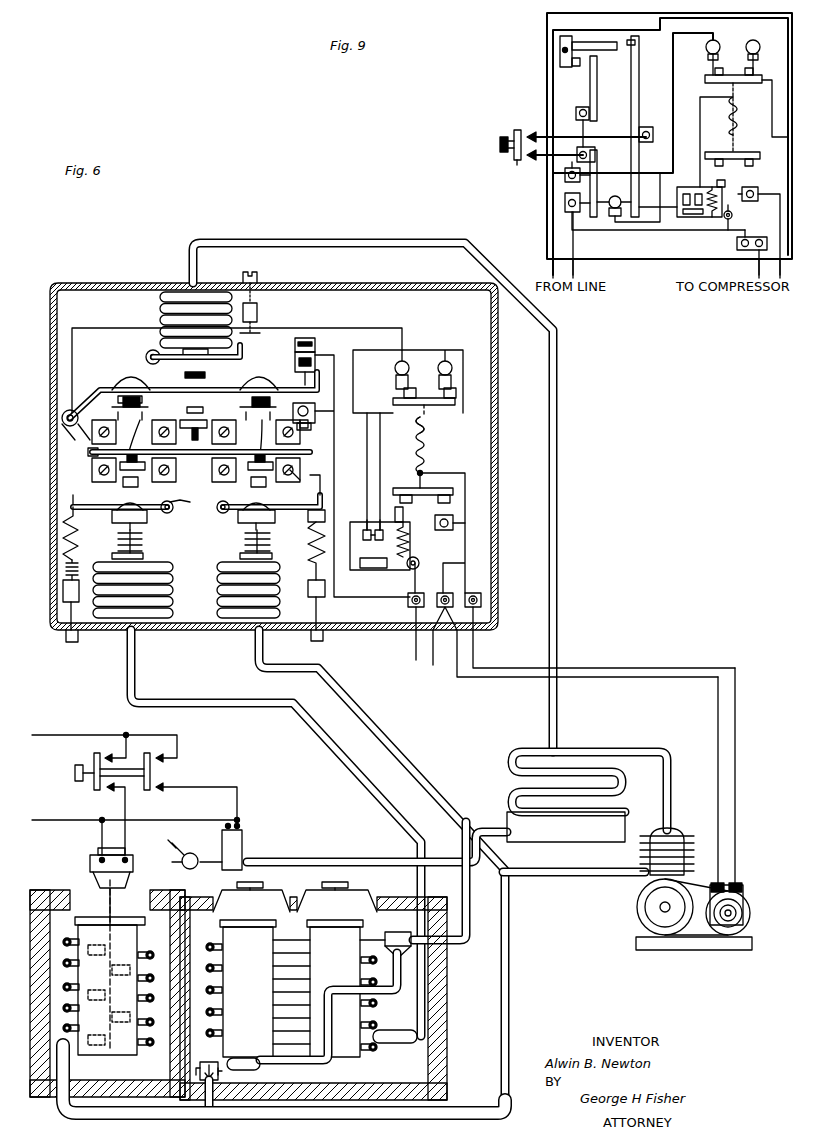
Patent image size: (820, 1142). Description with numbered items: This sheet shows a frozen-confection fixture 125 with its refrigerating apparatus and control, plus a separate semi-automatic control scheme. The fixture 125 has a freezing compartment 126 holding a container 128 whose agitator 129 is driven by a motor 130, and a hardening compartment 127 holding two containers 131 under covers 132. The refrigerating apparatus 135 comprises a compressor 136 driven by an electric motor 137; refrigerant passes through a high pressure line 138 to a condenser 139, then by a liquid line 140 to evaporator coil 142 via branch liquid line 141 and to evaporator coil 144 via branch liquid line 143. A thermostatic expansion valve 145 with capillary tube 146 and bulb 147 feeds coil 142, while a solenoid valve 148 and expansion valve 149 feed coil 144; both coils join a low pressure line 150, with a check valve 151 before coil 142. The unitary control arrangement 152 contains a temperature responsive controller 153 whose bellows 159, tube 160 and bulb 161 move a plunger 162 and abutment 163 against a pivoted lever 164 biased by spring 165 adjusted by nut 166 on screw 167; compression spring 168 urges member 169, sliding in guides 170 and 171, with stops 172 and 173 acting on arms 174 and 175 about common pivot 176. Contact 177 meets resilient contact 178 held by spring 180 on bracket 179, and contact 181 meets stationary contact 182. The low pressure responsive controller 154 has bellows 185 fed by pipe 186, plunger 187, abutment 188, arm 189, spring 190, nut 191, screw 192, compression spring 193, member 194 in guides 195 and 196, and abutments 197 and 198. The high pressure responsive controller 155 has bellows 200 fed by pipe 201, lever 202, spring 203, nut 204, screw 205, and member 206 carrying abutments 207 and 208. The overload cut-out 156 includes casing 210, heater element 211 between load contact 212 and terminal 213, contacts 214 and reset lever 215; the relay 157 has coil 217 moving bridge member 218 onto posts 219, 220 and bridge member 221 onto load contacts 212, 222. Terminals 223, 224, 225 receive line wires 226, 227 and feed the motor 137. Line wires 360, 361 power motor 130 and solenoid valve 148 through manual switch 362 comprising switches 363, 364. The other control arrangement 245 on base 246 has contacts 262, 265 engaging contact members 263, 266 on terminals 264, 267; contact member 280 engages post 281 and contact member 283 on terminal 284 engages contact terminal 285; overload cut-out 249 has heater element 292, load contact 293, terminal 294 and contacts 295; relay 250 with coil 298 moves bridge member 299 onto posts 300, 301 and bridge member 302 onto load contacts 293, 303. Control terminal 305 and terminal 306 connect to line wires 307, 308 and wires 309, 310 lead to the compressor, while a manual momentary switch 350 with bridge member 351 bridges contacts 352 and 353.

In FIG. 6, the unitary control arrangement 152 is at (100, 246).
In FIG. 6, the high pressure responsive controller 155 is at (210, 275).
In FIG. 6, the pipe 201 is at (560, 441).
In FIG. 6, the capillary tube 160 is at (174, 703).
In FIG. 6, the pipe 186 is at (338, 676).
In FIG. 6, the branch liquid line 143 is at (305, 858).
In FIG. 6, the liquid line 140 is at (472, 838).
In FIG. 6, the branch liquid line 141 is at (472, 900).
In FIG. 6, the condenser 139 is at (512, 784).
In FIG. 6, the mechanical refrigerating apparatus 135 is at (478, 748).
In FIG. 6, the high pressure line 138 is at (678, 796).
In FIG. 6, the compressor 136 is at (637, 908).
In FIG. 6, the electric motor 137 is at (744, 900).
In FIG. 6, the bellows 200 is at (160, 310).
In FIG. 6, the screw 205 is at (258, 278).
In FIG. 6, the nut 204 is at (257, 312).
In FIG. 6, the spring 203 is at (246, 346).
In FIG. 6, the stationary bracket 179 is at (315, 343).
In FIG. 6, the spring 180 is at (295, 356).
In FIG. 6, the resilient contact 178 is at (298, 366).
In FIG. 6, the contact 177 is at (306, 384).
In FIG. 6, the arm 174 is at (102, 372).
In FIG. 6, the common pivot 176 is at (71, 410).
In FIG. 6, the arm 175 is at (92, 440).
In FIG. 6, the abutment 208 is at (184, 375).
In FIG. 6, the pivoted lever 202 is at (226, 364).
In FIG. 6, the member 206 is at (143, 399).
In FIG. 6, the stop 172 is at (122, 406).
In FIG. 6, the stop 173 is at (122, 430).
In FIG. 6, the guide 170 is at (92, 458).
In FIG. 6, the abutment 197 is at (258, 408).
In FIG. 6, the abutment 198 is at (252, 432).
In FIG. 6, the guide 196 is at (294, 463).
In FIG. 6, the member 194 is at (293, 482).
In FIG. 6, the abutment 207 is at (205, 468).
In FIG. 6, the stationary contact 182 is at (308, 428).
In FIG. 6, the contact 181 is at (334, 436).
In FIG. 6, the pivoted lever 164 is at (85, 498).
In FIG. 6, the member 169 is at (141, 498).
In FIG. 6, the guide 171 is at (188, 494).
In FIG. 6, the guide 195 is at (228, 494).
In FIG. 6, the pivoted arm 189 is at (320, 488).
In FIG. 6, the spring 165 is at (101, 524).
In FIG. 6, the compression spring 168 is at (80, 548).
In FIG. 6, the nut 166 is at (80, 580).
In FIG. 6, the screw 167 is at (66, 640).
In FIG. 6, the abutment 163 is at (148, 518).
In FIG. 6, the plunger 162 is at (146, 545).
In FIG. 6, the bellows 159 is at (174, 580).
In FIG. 6, the temperature responsive controller 153 is at (105, 640).
In FIG. 6, the low pressure responsive controller 154 is at (235, 641).
In FIG. 6, the abutment 188 is at (240, 518).
In FIG. 6, the compression spring 193 is at (244, 545).
In FIG. 6, the bellows 185 is at (217, 602).
In FIG. 6, the spring 190 is at (308, 514).
In FIG. 6, the plunger 187 is at (307, 547).
In FIG. 6, the nut 191 is at (320, 600).
In FIG. 6, the screw 192 is at (323, 641).
In FIG. 6, the overload cut-out 156 is at (355, 505).
In FIG. 6, the relay 157 is at (438, 436).
In FIG. 6, the operating coil 217 is at (428, 455).
In FIG. 6, the bridge member 218 is at (393, 400).
In FIG. 6, the contact post 219 is at (395, 370).
In FIG. 6, the contact post 220 is at (440, 376).
In FIG. 6, the bridge member 221 is at (410, 488).
In FIG. 6, the load contact 222 is at (436, 515).
In FIG. 6, the load contact 212 is at (403, 518).
In FIG. 6, the casing 210 is at (356, 570).
In FIG. 6, the heater element 211 is at (405, 540).
In FIG. 6, the contacts 214 is at (378, 542).
In FIG. 6, the reset lever 215 is at (380, 567).
In FIG. 6, the terminal 213 is at (410, 570).
In FIG. 6, the terminal 223 is at (407, 606).
In FIG. 6, the terminal 224 is at (438, 594).
In FIG. 6, the terminal 225 is at (468, 593).
In FIG. 6, the line wire 226 is at (414, 653).
In FIG. 6, the line wire 227 is at (438, 660).
In FIG. 6, the line wire 360 is at (45, 734).
In FIG. 6, the line wire 361 is at (33, 820).
In FIG. 6, the manual switch 362 is at (68, 773).
In FIG. 6, the switch 363 is at (93, 758).
In FIG. 6, the switch 364 is at (134, 764).
In FIG. 6, the motor 130 is at (137, 858).
In FIG. 6, the fixture 125 is at (50, 867).
In FIG. 6, the solenoid valve 148 is at (242, 850).
In FIG. 6, the expansion valve 149 is at (190, 855).
In FIG. 6, the freezing compartment 126 is at (146, 1079).
In FIG. 6, the container 128 is at (78, 934).
In FIG. 6, the evaporator coil 144 is at (146, 958).
In FIG. 6, the agitator 129 is at (100, 1060).
In FIG. 6, the storing or hardening compartment 127 is at (392, 1084).
In FIG. 6, the containers 131 is at (224, 933).
In FIG. 6, the covers 132 is at (266, 891).
In FIG. 6, the thermostatic expansion valve 145 is at (396, 930).
In FIG. 6, the capillary tube 146 is at (398, 990).
In FIG. 6, the evaporator coil 142 is at (378, 1004).
In FIG. 6, the bulb 161 is at (390, 1045).
In FIG. 6, the bulb 147 is at (257, 1068).
In FIG. 6, the check valve 151 is at (220, 1075).
In FIG. 6, the low pressure line 150 is at (500, 1098).
In FIG. 9, the base 246 is at (547, 102).
In FIG. 9, the unitary control arrangement 245 is at (533, 80).
In FIG. 9, the contact 262 is at (576, 67).
In FIG. 9, the contact 265 is at (603, 50).
In FIG. 9, the contact member 263 is at (596, 93).
In FIG. 9, the contact member 266 is at (636, 93).
In FIG. 9, the terminal 264 is at (577, 113).
In FIG. 9, the terminal 267 is at (645, 127).
In FIG. 9, the contact 353 is at (529, 130).
In FIG. 9, the contact 352 is at (531, 163).
In FIG. 9, the manual momentary switch 350 is at (500, 168).
In FIG. 9, the bridge member 351 is at (517, 168).
In FIG. 9, the terminal 284 is at (577, 150).
In FIG. 9, the control terminal 305 is at (572, 173).
In FIG. 9, the contact member 283 is at (597, 165).
In FIG. 9, the contact terminal 285 is at (572, 193).
In FIG. 9, the contact post 281 is at (610, 198).
In FIG. 9, the contact member 280 is at (646, 206).
In FIG. 9, the contacts 295 is at (684, 194).
In FIG. 9, the overload cut-out device 249 is at (697, 222).
In FIG. 9, the heater element 292 is at (718, 201).
In FIG. 9, the load contact 293 is at (721, 180).
In FIG. 9, the load contact 303 is at (746, 182).
In FIG. 9, the terminal 294 is at (733, 216).
In FIG. 9, the terminal 306 is at (744, 237).
In FIG. 9, the bridge member 302 is at (730, 152).
In FIG. 9, the operating coil 298 is at (738, 108).
In FIG. 9, the starter or relay 250 is at (748, 122).
In FIG. 9, the bridge member 299 is at (705, 79).
In FIG. 9, the contact post 300 is at (706, 52).
In FIG. 9, the contact post 301 is at (758, 44).
In FIG. 9, the line wire 307 is at (553, 270).
In FIG. 9, the line wire 308 is at (573, 270).
In FIG. 9, the wire 309 is at (759, 270).
In FIG. 9, the wire 310 is at (780, 270).